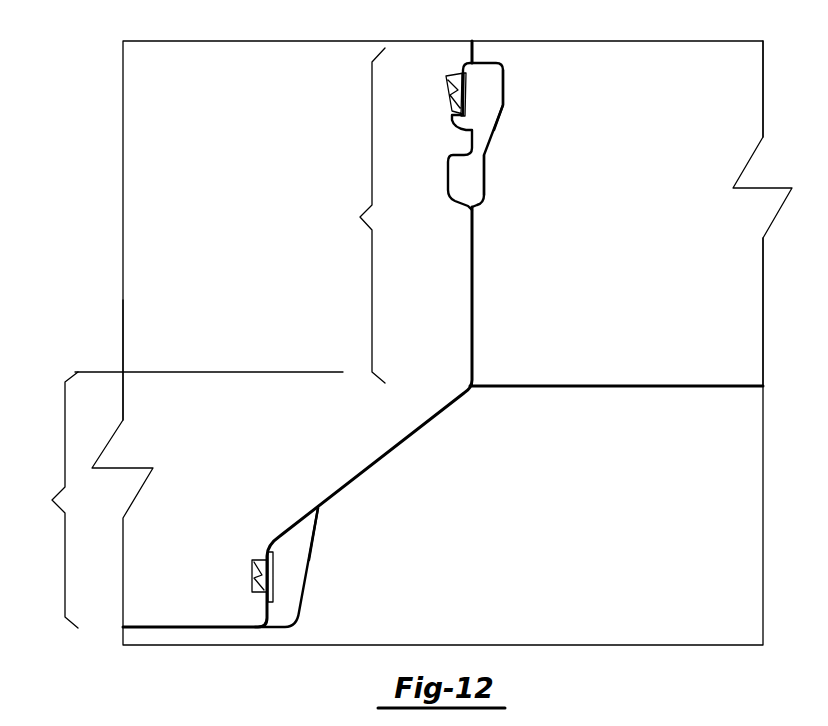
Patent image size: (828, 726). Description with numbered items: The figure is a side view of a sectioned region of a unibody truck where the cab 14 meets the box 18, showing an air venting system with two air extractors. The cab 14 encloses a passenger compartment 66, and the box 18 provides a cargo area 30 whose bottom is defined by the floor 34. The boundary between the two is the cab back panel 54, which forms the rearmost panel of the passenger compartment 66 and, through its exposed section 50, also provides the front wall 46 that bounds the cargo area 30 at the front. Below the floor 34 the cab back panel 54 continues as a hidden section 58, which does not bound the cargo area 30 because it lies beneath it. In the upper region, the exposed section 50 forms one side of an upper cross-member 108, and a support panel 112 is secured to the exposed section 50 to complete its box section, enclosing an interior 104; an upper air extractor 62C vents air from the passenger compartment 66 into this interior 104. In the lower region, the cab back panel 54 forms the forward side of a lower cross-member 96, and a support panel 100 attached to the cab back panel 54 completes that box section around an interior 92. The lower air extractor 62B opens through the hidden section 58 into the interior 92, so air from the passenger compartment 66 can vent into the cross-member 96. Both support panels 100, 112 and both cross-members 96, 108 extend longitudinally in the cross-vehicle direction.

The cab 14 is at (295, 140).
The box 18 is at (625, 136).
The cargo area 30 is at (592, 318).
The floor 34 is at (662, 386).
The front wall 46 is at (472, 317).
The exposed section 50 is at (532, 272).
The cab back panel 54 is at (355, 475).
The hidden section 58 is at (51, 500).
The air extractor 62B is at (253, 570).
The air extractor 62C is at (444, 80).
The passenger compartment 66 is at (295, 310).
The interior 92 is at (287, 597).
The cross-member 96 is at (305, 588).
The support panel 100 is at (315, 528).
The interior 104 is at (475, 93).
The cross-member 108 is at (502, 110).
The support panel 112 is at (485, 172).